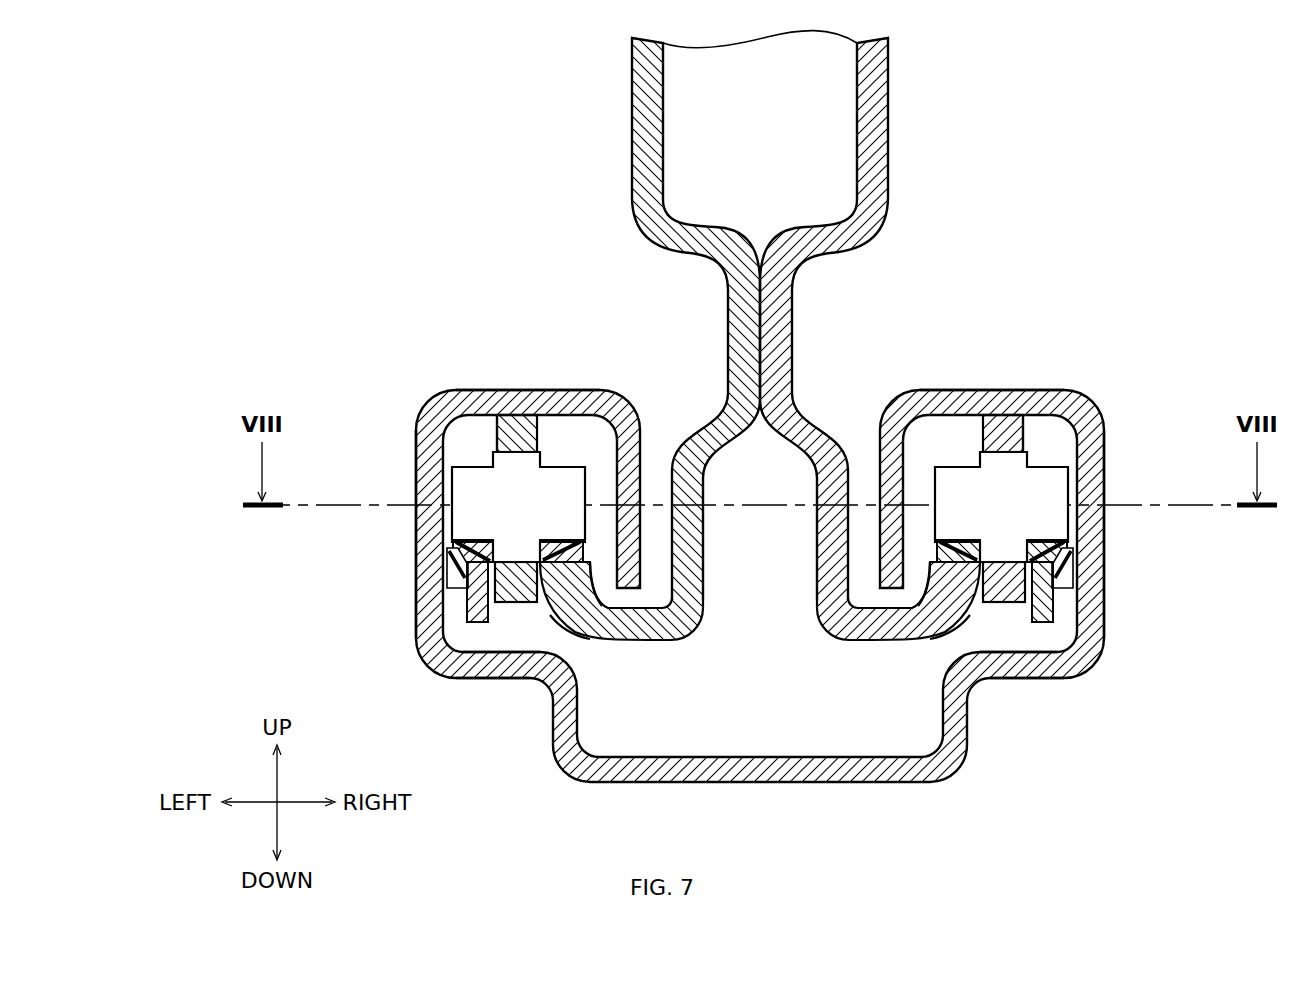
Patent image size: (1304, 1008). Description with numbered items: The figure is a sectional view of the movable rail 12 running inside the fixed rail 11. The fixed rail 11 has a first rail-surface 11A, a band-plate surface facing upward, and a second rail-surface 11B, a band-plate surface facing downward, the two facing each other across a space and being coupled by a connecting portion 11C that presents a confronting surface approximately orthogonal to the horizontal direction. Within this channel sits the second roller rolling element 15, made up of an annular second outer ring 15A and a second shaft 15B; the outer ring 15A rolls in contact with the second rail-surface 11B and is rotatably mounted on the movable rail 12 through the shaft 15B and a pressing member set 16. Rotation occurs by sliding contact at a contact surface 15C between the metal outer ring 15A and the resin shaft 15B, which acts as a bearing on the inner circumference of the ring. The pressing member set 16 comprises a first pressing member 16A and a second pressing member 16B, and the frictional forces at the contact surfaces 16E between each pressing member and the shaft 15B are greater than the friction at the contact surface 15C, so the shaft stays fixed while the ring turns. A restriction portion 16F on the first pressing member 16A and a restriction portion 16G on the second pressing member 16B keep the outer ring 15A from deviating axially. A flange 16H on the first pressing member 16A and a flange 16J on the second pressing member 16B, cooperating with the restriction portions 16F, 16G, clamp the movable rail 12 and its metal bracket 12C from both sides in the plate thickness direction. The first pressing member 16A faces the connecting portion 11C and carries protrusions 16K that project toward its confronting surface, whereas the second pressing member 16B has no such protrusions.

The fixed rail 11 is at (857, 790).
The first rail-surface 11A is at (497, 645).
The second rail-surface 11B is at (566, 430).
The connecting portion 11C is at (428, 455).
The movable rail 12 is at (828, 397).
The bracket 12C is at (458, 665).
The second roller rolling element 15 is at (755, 551).
The second outer ring 15A is at (517, 425).
The second shaft 15B is at (470, 478).
The contact surface 15C is at (498, 420).
The pressing member set 16 is at (753, 623).
The first pressing member 16A is at (445, 550).
The second pressing member 16B is at (632, 642).
The contact surfaces 16E is at (470, 545).
The restriction portion 16F is at (468, 640).
The restriction portion 16G is at (555, 630).
The flange 16H is at (470, 615).
The flange 16J is at (575, 590).
The protrusions 16K is at (452, 572).